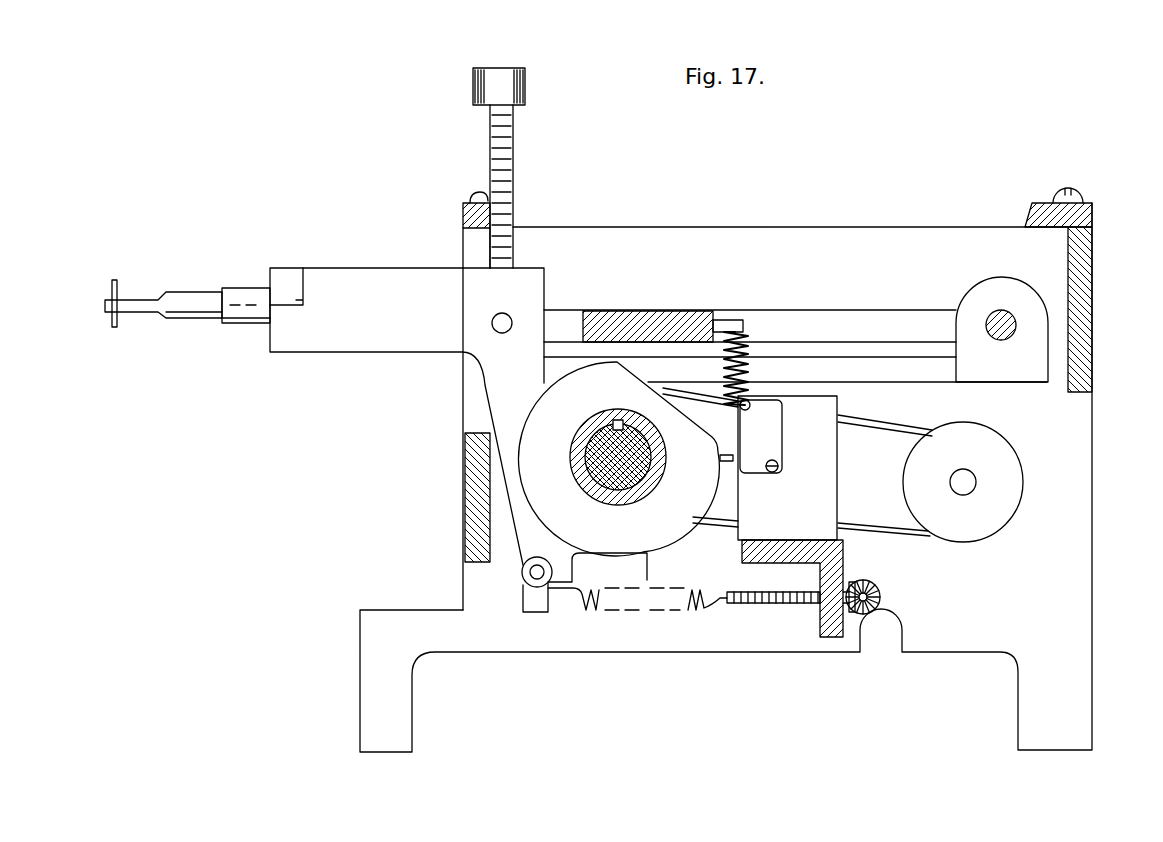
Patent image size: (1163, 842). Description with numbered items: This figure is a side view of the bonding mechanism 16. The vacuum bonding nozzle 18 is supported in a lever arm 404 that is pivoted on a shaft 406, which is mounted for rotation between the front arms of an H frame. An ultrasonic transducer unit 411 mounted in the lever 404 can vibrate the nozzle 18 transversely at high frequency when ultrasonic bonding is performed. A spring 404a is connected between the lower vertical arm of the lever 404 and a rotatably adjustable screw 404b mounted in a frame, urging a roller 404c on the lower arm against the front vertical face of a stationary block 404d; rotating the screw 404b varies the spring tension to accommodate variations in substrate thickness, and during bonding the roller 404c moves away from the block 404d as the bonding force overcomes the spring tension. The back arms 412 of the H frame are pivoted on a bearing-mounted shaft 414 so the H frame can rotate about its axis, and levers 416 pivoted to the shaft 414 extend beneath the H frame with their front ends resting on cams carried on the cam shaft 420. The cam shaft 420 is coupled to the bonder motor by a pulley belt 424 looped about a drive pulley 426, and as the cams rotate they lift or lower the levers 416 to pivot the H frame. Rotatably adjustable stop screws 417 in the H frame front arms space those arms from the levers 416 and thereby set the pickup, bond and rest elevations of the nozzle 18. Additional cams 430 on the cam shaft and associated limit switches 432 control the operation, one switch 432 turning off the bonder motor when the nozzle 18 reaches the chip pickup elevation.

The bonding mechanism 16 is at (698, 218).
The vacuum bonding nozzle 18 is at (117, 281).
The lever arm 404 is at (338, 280).
The spring 404a is at (759, 617).
The rotatably adjustable screw 404b is at (880, 590).
The roller 404c is at (522, 577).
The stationary block 404d is at (567, 567).
The shaft 406 is at (492, 324).
The ultrasonic transducer unit 411 is at (242, 292).
The back arms 412 is at (695, 317).
The shaft 414 is at (1017, 325).
The levers 416 is at (988, 297).
The stop screws 417 is at (529, 168).
The cam shaft 420 is at (633, 468).
The pulley belt 424 is at (892, 423).
The drive pulley 426 is at (1008, 448).
The cams 430 is at (645, 548).
The limit switches 432 is at (775, 433).